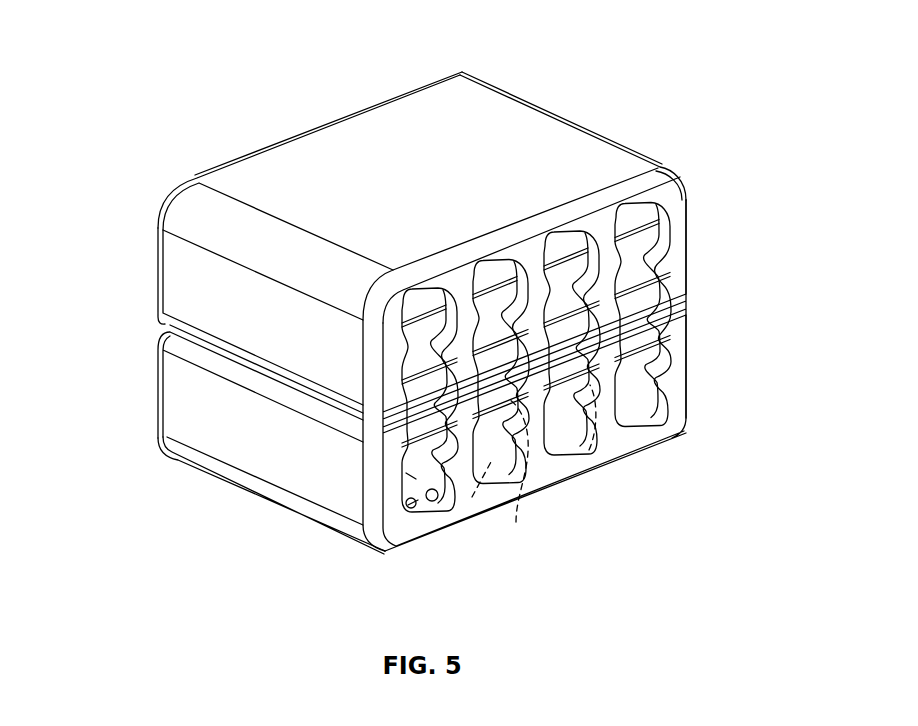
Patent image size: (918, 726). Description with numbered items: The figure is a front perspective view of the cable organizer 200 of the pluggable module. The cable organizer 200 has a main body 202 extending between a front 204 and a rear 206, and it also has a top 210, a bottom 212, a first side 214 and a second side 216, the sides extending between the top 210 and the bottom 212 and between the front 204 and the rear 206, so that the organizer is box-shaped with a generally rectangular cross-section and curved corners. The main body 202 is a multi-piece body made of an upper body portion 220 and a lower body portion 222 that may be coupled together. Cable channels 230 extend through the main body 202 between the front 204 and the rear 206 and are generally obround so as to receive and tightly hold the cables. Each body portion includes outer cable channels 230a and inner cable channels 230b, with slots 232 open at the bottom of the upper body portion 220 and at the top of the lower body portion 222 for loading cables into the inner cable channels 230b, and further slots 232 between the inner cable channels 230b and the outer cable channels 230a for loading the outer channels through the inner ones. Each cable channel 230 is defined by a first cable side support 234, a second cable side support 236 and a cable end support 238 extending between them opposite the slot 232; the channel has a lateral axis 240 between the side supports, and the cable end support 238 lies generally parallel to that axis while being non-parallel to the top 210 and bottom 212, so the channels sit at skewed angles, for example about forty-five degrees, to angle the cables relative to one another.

The cable organizer 200 is at (542, 77).
The main body 202 is at (221, 430).
The front 204 is at (687, 378).
The rear 206 is at (160, 403).
The top 210 is at (574, 160).
The bottom 212 is at (265, 497).
The first side 214 is at (687, 262).
The second side 216 is at (188, 280).
The upper body portion 220 is at (346, 142).
The lower body portion 222 is at (546, 466).
The cable channel 230 is at (402, 373).
The outer cable channel 230a is at (657, 212).
The inner cable channel 230b is at (654, 284).
The slot 232 is at (652, 252).
The first cable side support 234 is at (405, 472).
The second cable side support 236 is at (408, 506).
The cable end support 238 is at (408, 506).
The lateral axis 240 is at (516, 522).